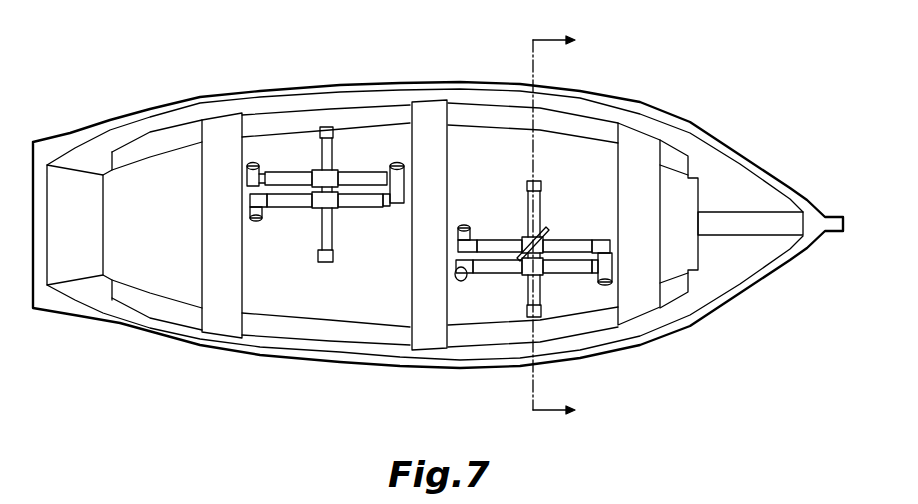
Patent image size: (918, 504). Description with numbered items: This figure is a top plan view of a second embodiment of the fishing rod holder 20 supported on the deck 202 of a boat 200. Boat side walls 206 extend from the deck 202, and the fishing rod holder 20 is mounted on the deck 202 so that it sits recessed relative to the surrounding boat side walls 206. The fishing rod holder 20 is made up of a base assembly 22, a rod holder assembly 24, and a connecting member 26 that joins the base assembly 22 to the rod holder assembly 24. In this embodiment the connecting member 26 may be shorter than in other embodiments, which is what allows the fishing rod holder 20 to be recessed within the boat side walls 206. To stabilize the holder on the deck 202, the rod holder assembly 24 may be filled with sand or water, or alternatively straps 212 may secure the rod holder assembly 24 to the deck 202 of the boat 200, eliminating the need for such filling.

The boat 200 is at (428, 225).
The deck 202 is at (365, 262).
The boat side walls 206 is at (428, 225).
The fishing rod holder 20 is at (453, 222).
The base assembly 22 is at (427, 222).
The rod holder assembly 24 is at (429, 227).
The connecting member 26 is at (429, 223).
The straps 212 is at (588, 162).